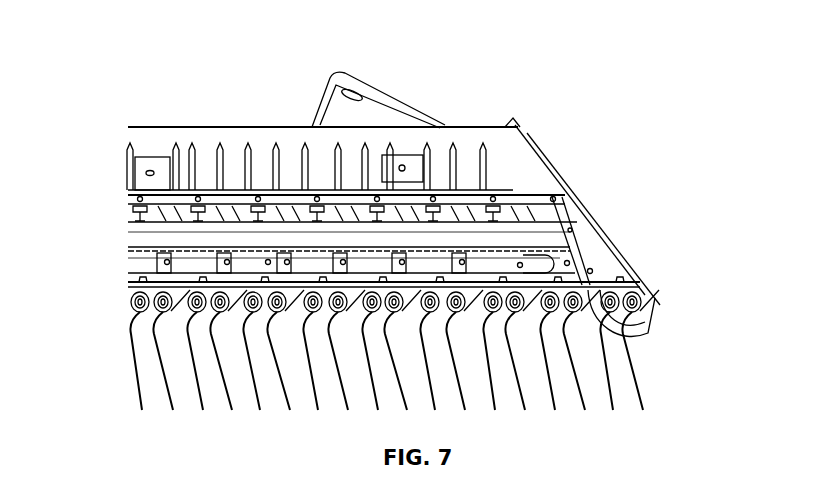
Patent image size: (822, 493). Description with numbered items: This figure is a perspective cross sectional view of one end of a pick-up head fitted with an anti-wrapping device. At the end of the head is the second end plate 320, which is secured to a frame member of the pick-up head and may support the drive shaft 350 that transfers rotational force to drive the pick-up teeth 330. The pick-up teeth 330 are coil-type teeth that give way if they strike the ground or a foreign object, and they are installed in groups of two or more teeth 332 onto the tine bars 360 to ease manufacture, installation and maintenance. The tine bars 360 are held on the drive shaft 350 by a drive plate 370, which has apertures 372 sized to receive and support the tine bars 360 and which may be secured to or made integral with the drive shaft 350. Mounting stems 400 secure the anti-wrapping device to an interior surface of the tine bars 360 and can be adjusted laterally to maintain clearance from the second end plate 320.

The second end plate 320 is at (533, 155).
The pick-up teeth 330 is at (348, 417).
The groups of two or more teeth 332 is at (232, 412).
The drive shaft 350 is at (147, 240).
The tine bars 360 is at (132, 198).
The drive plate 370 is at (233, 218).
The apertures 372 is at (222, 196).
The mounting stems 400 is at (565, 201).